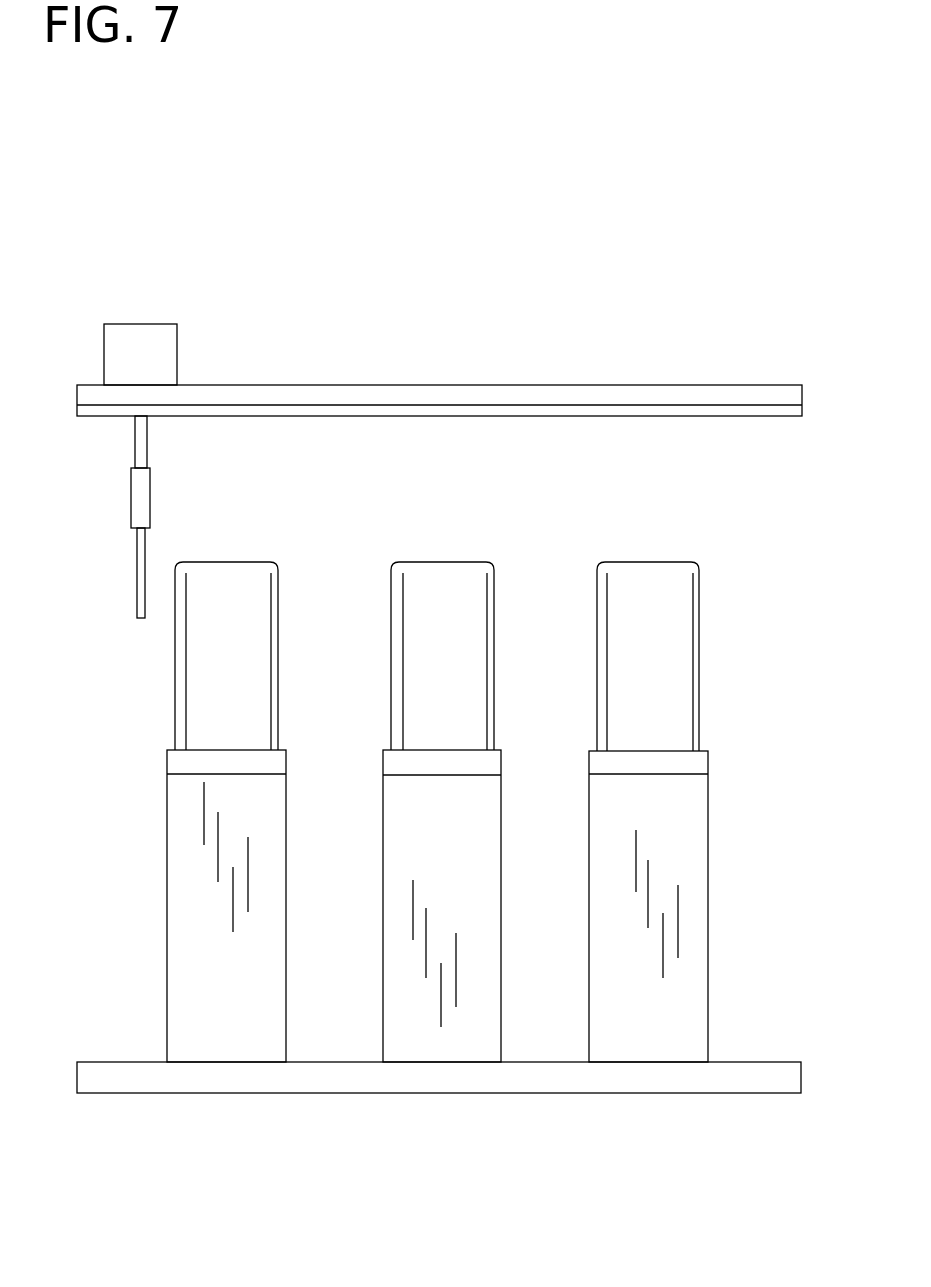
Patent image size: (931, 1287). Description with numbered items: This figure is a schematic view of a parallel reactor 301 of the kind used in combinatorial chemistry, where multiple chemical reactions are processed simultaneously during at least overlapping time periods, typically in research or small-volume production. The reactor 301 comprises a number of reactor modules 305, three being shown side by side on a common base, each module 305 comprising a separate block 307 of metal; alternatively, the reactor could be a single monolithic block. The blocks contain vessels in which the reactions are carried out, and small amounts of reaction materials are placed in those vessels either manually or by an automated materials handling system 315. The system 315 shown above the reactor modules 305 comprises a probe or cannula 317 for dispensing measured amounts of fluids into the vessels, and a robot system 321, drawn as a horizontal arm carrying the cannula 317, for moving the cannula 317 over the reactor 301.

The reactor 301 is at (442, 814).
The reactor module 305 is at (165, 896).
The block 307 is at (167, 1005).
The automated materials handling system 315 is at (417, 414).
The cannula 317 is at (137, 595).
The robot system 321 is at (294, 385).